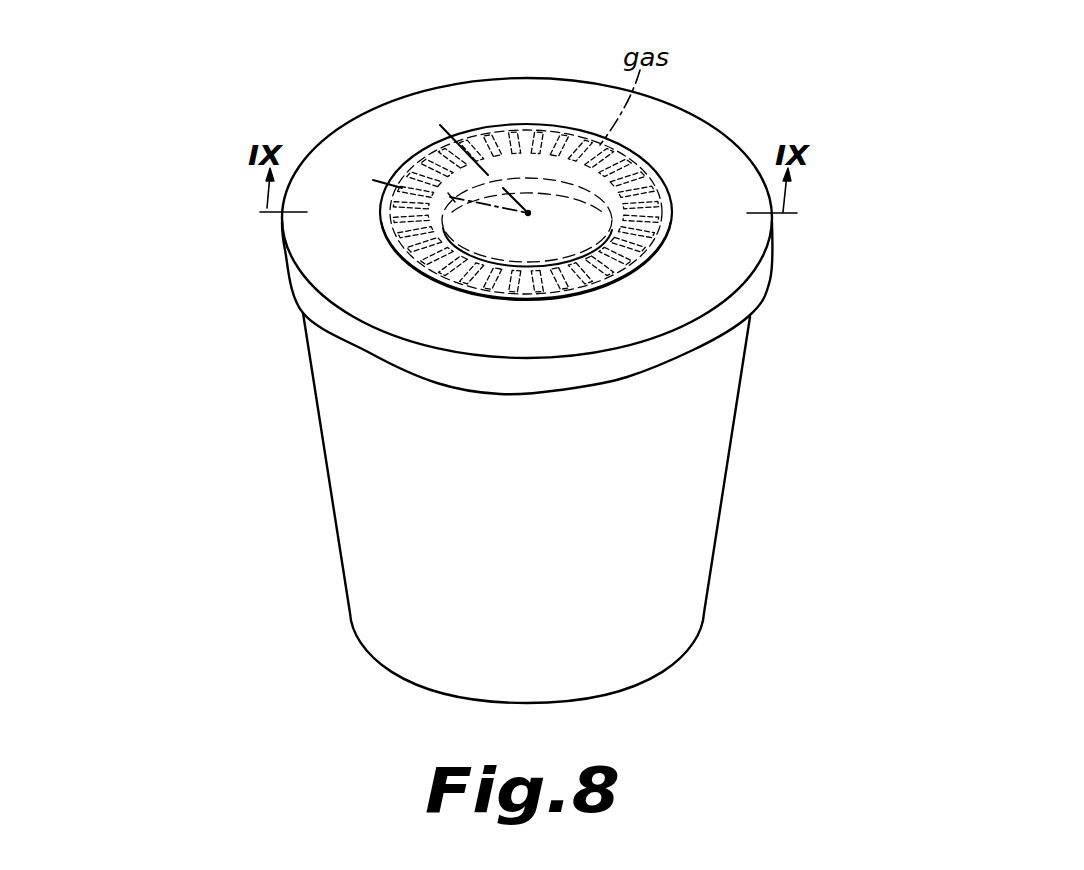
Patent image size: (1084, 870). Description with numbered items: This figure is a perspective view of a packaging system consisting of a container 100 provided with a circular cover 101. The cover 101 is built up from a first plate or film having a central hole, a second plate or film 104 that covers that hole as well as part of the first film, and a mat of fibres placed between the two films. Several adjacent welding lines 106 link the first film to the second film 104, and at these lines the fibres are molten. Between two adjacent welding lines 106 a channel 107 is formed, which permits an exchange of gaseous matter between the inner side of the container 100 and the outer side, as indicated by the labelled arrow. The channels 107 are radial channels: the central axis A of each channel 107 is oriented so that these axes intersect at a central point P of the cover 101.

The container 100 is at (347, 492).
The cover 101 is at (285, 250).
The second plate or film 104 is at (590, 212).
The welding lines 106 is at (518, 133).
The channel 107 is at (490, 150).
The central point P is at (528, 212).
The central axis A is at (437, 158).